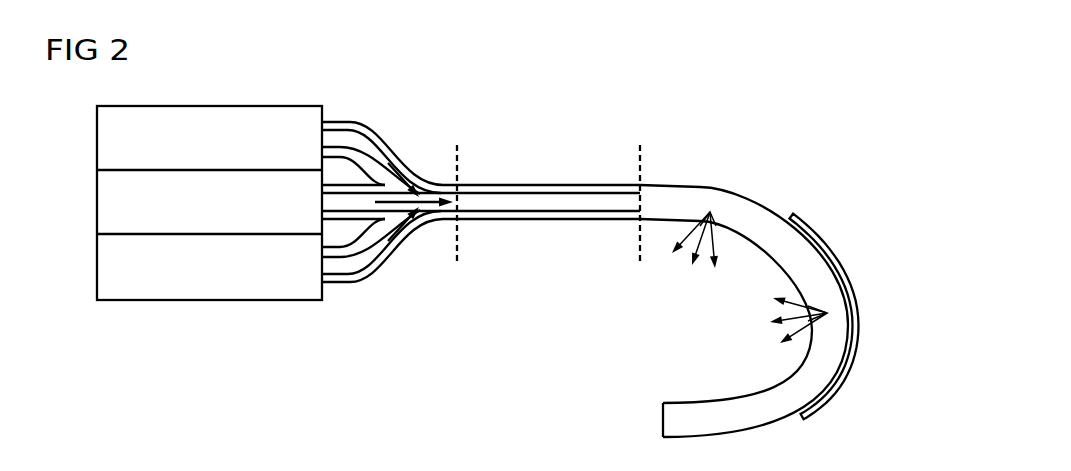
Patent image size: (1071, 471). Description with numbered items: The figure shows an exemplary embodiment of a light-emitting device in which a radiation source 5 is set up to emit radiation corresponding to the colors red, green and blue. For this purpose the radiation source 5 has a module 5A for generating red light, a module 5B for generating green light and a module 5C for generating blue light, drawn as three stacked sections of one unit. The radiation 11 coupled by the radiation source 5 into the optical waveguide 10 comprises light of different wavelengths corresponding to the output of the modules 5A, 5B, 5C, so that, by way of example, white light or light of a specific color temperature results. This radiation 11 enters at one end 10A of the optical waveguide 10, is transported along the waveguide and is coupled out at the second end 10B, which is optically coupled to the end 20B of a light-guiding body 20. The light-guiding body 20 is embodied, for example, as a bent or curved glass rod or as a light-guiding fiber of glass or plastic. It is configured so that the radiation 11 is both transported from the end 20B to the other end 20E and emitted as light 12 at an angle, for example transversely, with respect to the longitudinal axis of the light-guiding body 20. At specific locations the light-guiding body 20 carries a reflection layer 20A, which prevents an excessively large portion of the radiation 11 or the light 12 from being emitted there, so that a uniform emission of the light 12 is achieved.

The radiation source 5 is at (183, 250).
The module for generating red light 5A is at (108, 140).
The module for generating green light 5B is at (108, 203).
The module for generating blue light 5C is at (108, 265).
The optical waveguide 10 is at (563, 193).
The end of the optical waveguide 10A is at (457, 184).
The second end of the optical waveguide 10B is at (640, 219).
The radiation 11 is at (421, 212).
The light 12 is at (787, 311).
The light-guiding body 20 is at (761, 295).
The reflection layer 20A is at (858, 320).
The end of the light-guiding body 20B is at (640, 185).
The other end of the light-guiding body 20E is at (669, 418).